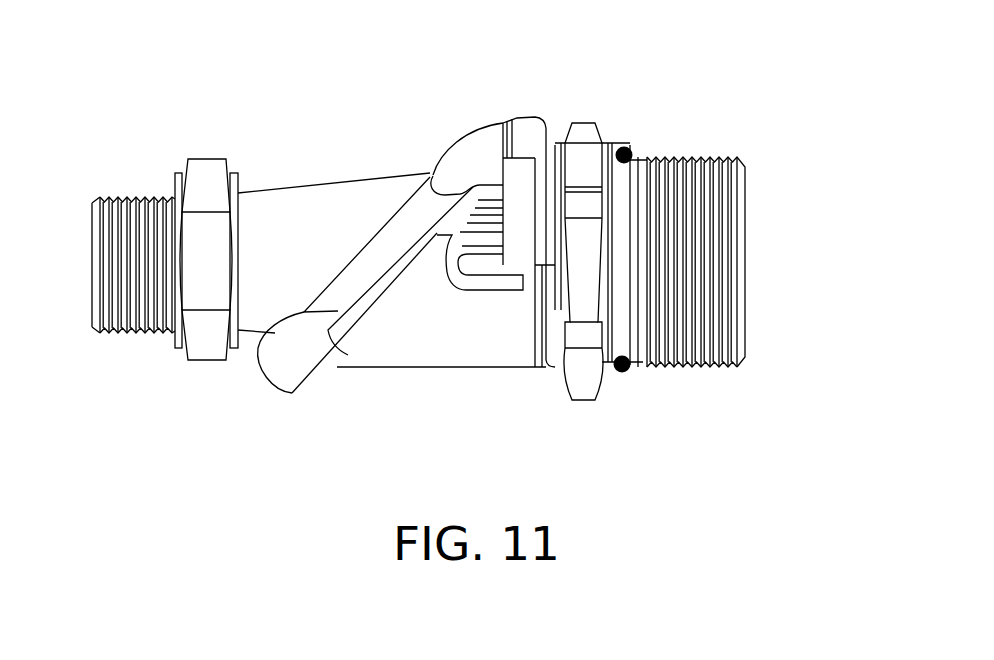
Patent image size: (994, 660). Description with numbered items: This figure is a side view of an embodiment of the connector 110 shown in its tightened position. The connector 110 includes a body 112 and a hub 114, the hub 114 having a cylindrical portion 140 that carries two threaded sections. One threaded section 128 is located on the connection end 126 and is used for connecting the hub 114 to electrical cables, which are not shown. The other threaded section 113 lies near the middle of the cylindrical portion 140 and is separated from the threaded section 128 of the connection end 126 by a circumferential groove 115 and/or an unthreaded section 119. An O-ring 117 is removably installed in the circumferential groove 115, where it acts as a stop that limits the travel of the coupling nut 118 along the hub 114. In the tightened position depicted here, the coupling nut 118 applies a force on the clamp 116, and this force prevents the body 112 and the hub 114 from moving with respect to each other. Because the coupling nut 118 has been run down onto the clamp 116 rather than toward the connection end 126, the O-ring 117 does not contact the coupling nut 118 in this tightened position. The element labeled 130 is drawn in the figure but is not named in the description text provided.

The connector 110 is at (248, 132).
The body 112 is at (223, 385).
The threaded section 113 is at (565, 127).
The hub 114 is at (762, 384).
The circumferential groove 115 is at (630, 218).
The clamp 116 is at (475, 122).
The O-ring 117 is at (632, 153).
The coupling nut 118 is at (597, 122).
The unthreaded section 119 is at (643, 363).
The connection end 126 is at (748, 258).
The threaded section 128 is at (683, 363).
The clamp lever 130 is at (292, 393).
The cylindrical portion 140 is at (495, 370).